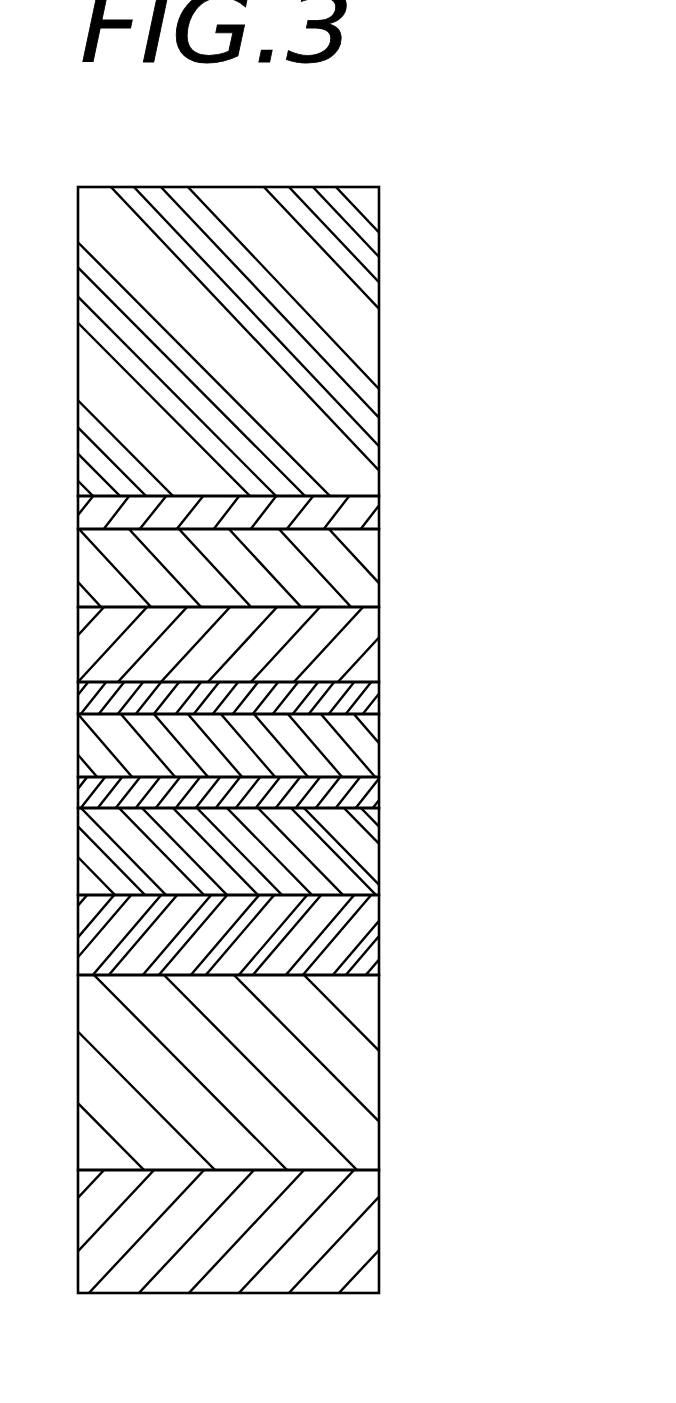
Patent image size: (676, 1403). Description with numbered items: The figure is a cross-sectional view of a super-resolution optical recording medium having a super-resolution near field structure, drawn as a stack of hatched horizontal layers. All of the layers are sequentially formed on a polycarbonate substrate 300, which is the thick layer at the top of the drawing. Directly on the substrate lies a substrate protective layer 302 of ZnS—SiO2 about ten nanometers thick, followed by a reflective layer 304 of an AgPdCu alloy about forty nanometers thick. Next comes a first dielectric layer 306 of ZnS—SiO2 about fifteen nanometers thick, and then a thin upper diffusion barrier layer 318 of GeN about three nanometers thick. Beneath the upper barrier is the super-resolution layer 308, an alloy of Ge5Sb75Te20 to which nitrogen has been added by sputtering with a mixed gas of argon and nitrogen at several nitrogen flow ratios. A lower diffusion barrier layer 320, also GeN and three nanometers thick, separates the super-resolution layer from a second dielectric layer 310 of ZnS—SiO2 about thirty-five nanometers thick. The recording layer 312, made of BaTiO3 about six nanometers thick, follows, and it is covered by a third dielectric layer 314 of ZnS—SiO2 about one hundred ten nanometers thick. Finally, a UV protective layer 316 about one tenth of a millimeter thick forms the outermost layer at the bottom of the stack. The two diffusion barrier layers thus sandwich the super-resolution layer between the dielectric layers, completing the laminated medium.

The polycarbonate substrate 300 is at (365, 332).
The substrate protective layer 302 is at (365, 513).
The reflective layer 304 is at (365, 567).
The first dielectric layer 306 is at (365, 643).
The upper diffusion barrier layer 318 is at (365, 698).
The super-resolution layer 308 is at (365, 753).
The lower diffusion barrier layer 320 is at (365, 795).
The second dielectric layer 310 is at (365, 847).
The recording layer 312 is at (365, 928).
The third dielectric layer 314 is at (365, 1070).
The UV protective layer 316 is at (365, 1233).